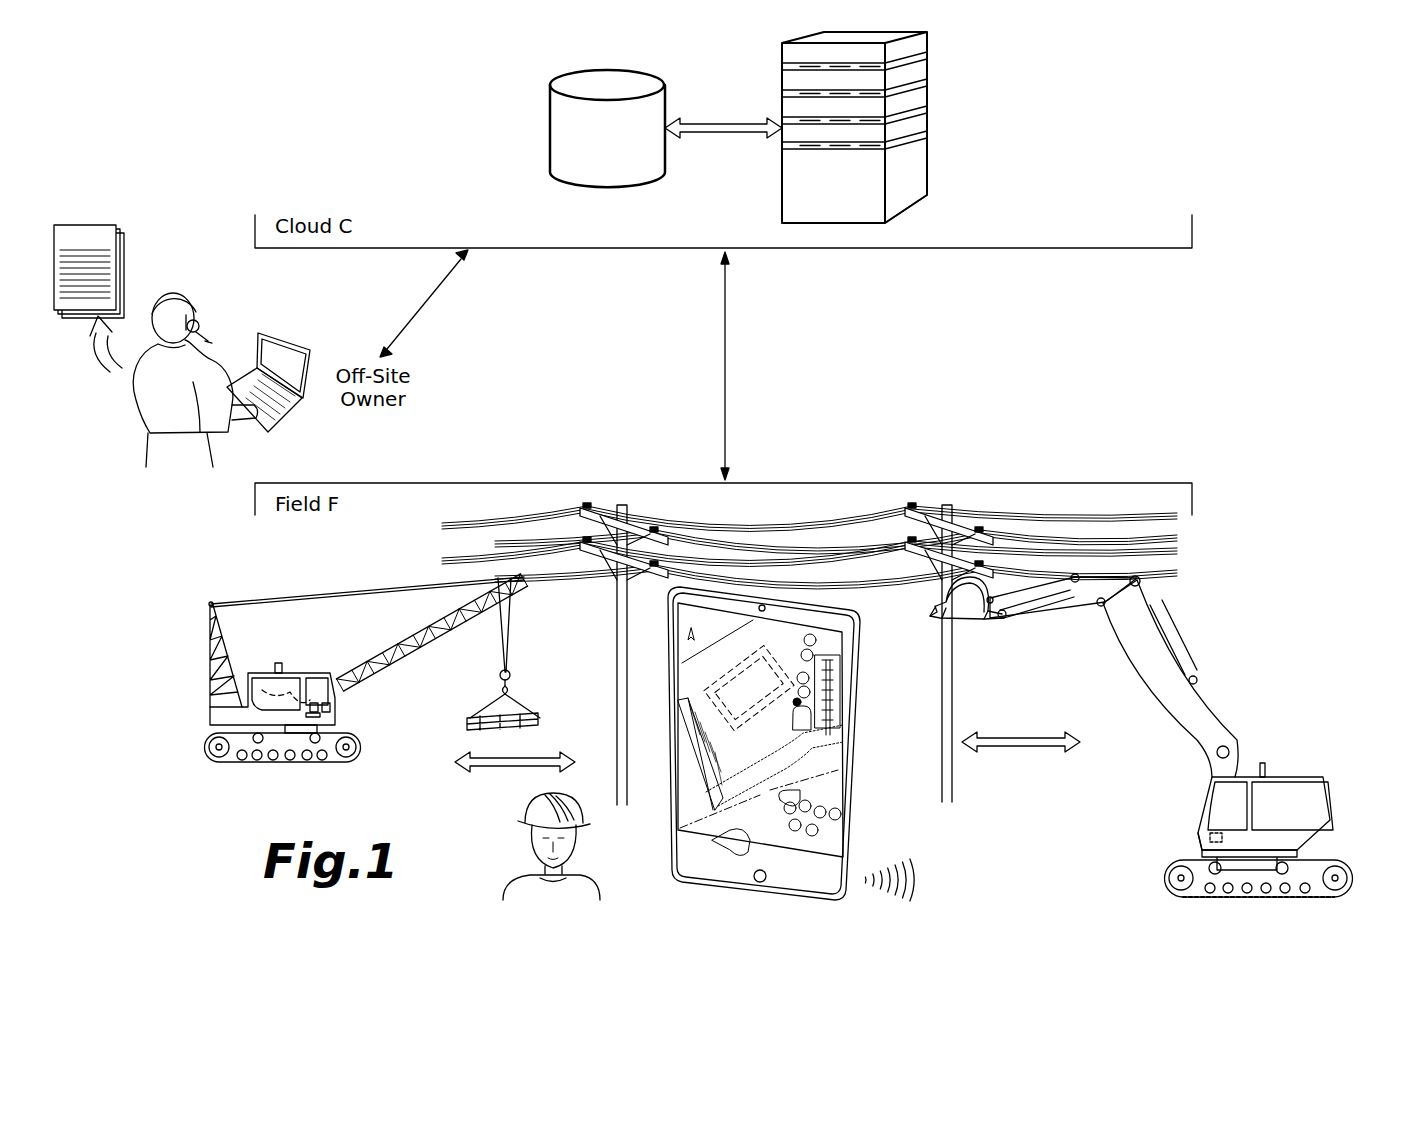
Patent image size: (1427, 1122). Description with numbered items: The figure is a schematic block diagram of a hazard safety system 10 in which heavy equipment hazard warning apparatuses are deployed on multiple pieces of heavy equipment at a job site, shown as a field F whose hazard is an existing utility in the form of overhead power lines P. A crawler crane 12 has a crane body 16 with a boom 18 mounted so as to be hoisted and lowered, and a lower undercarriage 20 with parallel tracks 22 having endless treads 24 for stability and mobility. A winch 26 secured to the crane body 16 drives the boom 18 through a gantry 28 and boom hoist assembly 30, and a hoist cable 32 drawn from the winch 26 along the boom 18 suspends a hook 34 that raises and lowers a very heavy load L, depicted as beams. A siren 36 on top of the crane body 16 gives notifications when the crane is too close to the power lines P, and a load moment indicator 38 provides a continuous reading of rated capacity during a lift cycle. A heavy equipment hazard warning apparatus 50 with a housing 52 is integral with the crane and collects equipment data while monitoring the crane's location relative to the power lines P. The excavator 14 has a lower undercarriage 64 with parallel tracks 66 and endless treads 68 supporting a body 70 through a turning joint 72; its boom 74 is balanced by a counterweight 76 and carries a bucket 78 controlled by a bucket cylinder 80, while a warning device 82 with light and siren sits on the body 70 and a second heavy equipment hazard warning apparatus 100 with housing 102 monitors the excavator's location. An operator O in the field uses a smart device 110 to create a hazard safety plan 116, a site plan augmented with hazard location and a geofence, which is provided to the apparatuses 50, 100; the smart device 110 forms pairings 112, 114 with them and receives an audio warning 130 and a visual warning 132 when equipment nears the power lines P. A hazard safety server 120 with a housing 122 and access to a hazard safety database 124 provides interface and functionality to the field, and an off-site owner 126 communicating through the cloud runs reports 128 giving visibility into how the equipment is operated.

The system for providing hazard safety 10 is at (1088, 124).
The crawler crane 12 is at (362, 669).
The excavator 14 is at (1183, 653).
The crane body 16 is at (336, 692).
The boom 18 is at (410, 642).
The lower undercarriage 20 is at (281, 773).
The parallel tracks 22 is at (265, 762).
The endless treads 24 is at (355, 756).
The winch 26 is at (251, 675).
The gantry 28 is at (210, 641).
The boom hoist assembly 30 is at (289, 598).
The hoist cable 32 is at (510, 630).
The hook 34 is at (512, 688).
The siren 36 is at (275, 663).
The load moment indicator 38 is at (337, 707).
The heavy equipment hazard warning apparatus 50 is at (312, 717).
The housing 52 is at (313, 703).
The lower undercarriage 64 is at (1166, 880).
The parallel tracks 66 is at (1352, 880).
The endless treads 68 is at (1280, 894).
The body 70 is at (1256, 787).
The turning joint 72 is at (1248, 862).
The boom 74 is at (1150, 676).
The counterweight 76 is at (1333, 830).
The bucket 78 is at (965, 604).
The bucket cylinder 80 is at (1046, 580).
The warning device 82 is at (1262, 763).
The heavy equipment hazard warning apparatus 100 is at (1201, 846).
The housing 102 is at (1212, 831).
The smart device 110 is at (773, 743).
The pairing 112 is at (492, 770).
The pairing 114 is at (1015, 752).
The hazard safety plan 116 is at (833, 714).
The hazard safety server 120 is at (926, 152).
The housing 122 is at (912, 206).
The hazard safety database 124 is at (550, 130).
The off-site owner 126 is at (288, 334).
The reports 128 is at (124, 262).
The audio warning 130 is at (922, 882).
The visual warning 132 is at (700, 846).
The overhead power lines P is at (764, 548).
The load L is at (538, 718).
The operator O is at (505, 885).